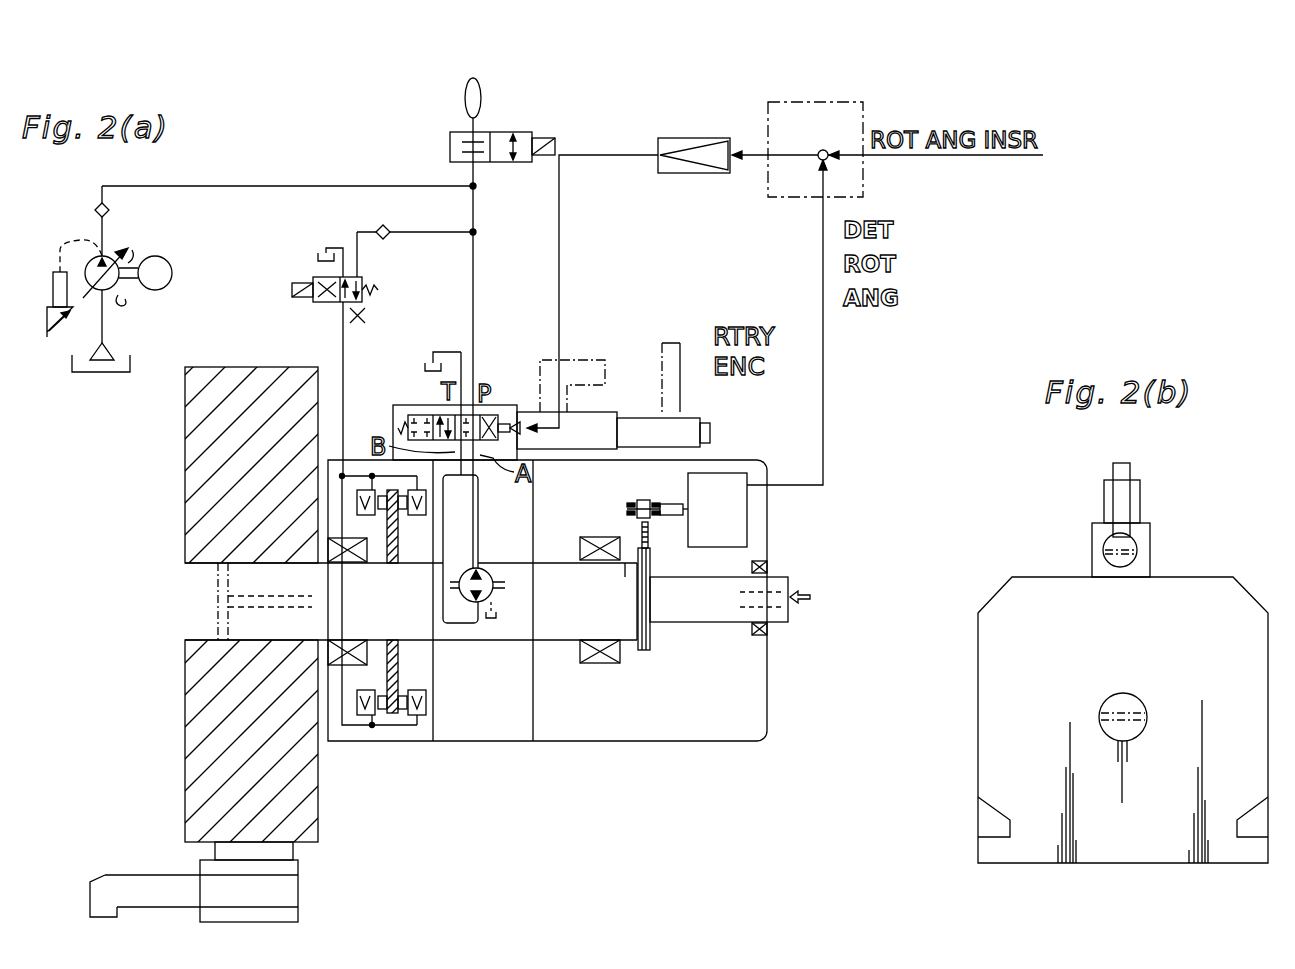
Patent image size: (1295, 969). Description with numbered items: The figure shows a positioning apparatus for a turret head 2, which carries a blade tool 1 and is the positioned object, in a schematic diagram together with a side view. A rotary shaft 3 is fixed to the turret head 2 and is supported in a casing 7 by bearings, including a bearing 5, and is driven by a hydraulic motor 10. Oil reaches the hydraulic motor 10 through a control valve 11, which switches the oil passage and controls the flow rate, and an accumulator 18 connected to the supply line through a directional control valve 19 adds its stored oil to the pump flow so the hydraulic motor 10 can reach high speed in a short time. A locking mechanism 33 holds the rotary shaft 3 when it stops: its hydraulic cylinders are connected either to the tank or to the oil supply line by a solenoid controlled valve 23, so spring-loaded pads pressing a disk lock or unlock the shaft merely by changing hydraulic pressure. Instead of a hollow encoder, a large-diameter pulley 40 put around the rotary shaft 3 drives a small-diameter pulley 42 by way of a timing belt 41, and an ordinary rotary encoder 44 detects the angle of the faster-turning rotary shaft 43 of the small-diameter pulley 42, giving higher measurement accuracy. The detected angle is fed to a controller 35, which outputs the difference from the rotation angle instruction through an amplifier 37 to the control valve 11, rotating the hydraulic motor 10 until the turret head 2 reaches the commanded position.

In FIG. 2A, the blade tool 1 is at (92, 900).
In FIG. 2A, the turret head 2 is at (192, 458).
In FIG. 2A, the rotary shaft 3 is at (192, 616).
In FIG. 2A, the bearing 5 is at (160, 245).
In FIG. 2A, the casing 7 is at (706, 742).
In FIG. 2B, the casing 7 is at (1135, 865).
In FIG. 2A, the hydraulic motor 10 is at (512, 630).
In FIG. 2A, the control valve 11 is at (505, 405).
In FIG. 2B, the control valve 11 is at (1152, 540).
In FIG. 2A, the accumulator 18 is at (464, 100).
In FIG. 2A, the directional control valve 19 is at (450, 149).
In FIG. 2A, the solenoid controlled valve 23 is at (332, 305).
In FIG. 2A, the locking mechanism 33 is at (368, 753).
In FIG. 2A, the controller 35 is at (787, 200).
In FIG. 2A, the amplifier 37 is at (680, 138).
In FIG. 2A, the large-diameter pulley 40 is at (645, 652).
In FIG. 2A, the timing belt 41 is at (649, 532).
In FIG. 2A, the small-diameter pulley 42 is at (636, 504).
In FIG. 2A, the rotary shaft of the small-diameter pulley 43 is at (676, 502).
In FIG. 2A, the rotary encoder 44 is at (718, 473).